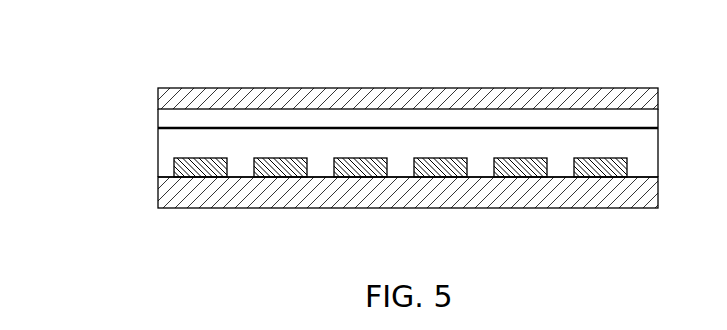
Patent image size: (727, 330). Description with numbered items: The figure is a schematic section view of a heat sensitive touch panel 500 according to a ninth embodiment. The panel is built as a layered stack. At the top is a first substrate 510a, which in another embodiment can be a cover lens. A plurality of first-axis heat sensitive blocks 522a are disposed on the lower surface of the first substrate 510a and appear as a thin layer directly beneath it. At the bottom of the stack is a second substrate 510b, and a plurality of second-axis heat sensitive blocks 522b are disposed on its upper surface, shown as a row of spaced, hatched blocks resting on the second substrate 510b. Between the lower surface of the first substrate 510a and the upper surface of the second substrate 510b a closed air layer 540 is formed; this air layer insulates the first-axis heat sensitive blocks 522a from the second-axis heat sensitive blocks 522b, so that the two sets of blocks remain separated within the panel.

The heat sensitive touch panel 500 is at (364, 129).
The first substrate 510a is at (207, 97).
The first-axis heat sensitive blocks 522a is at (198, 121).
The closed air layer 540 is at (167, 137).
The second-axis heat sensitive blocks 522b is at (173, 170).
The second substrate 510b is at (185, 193).